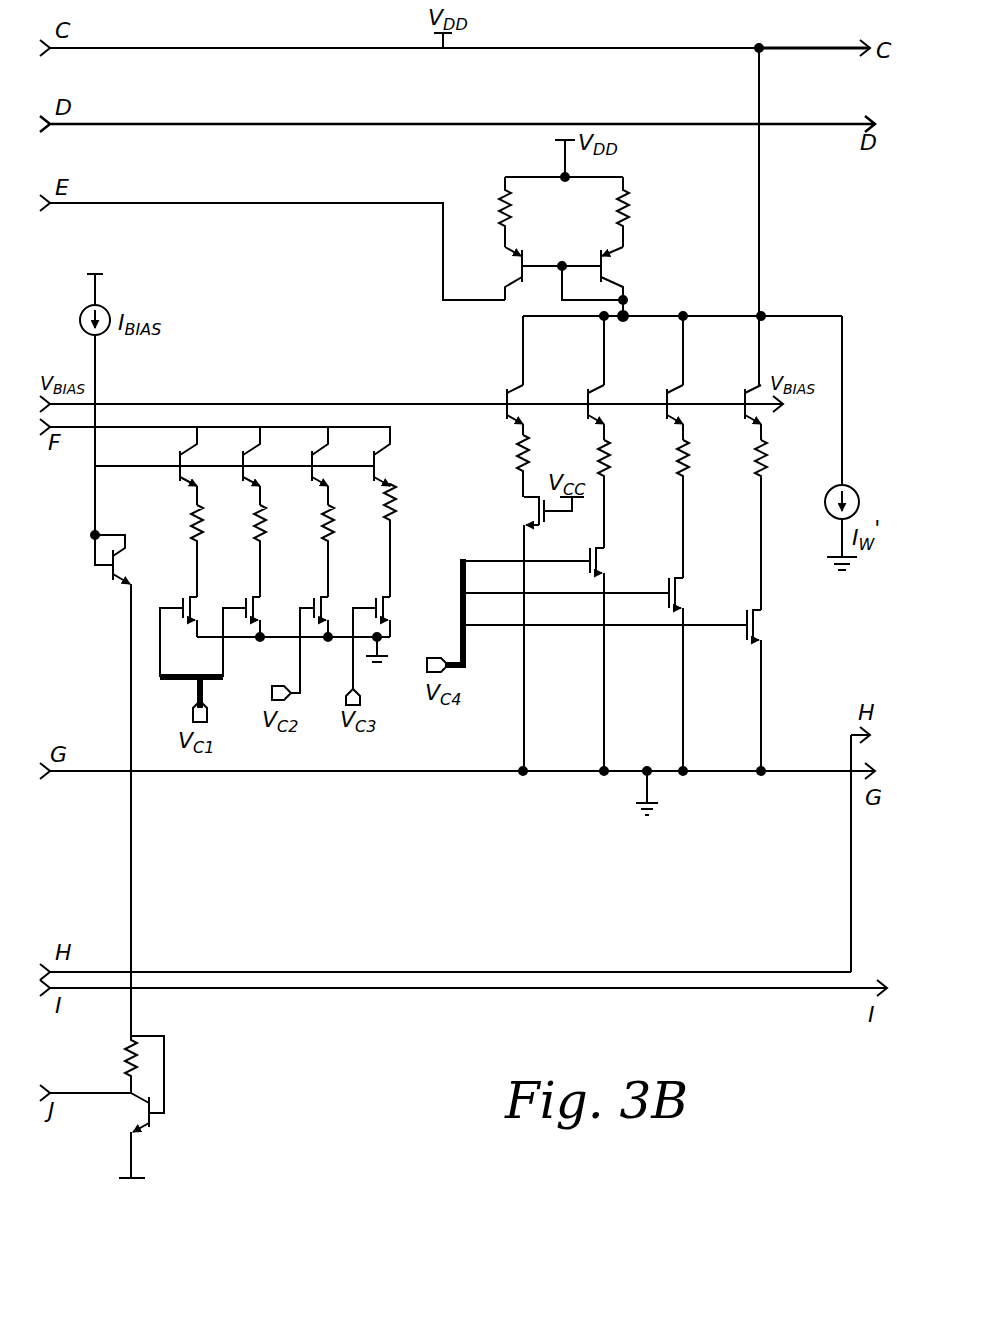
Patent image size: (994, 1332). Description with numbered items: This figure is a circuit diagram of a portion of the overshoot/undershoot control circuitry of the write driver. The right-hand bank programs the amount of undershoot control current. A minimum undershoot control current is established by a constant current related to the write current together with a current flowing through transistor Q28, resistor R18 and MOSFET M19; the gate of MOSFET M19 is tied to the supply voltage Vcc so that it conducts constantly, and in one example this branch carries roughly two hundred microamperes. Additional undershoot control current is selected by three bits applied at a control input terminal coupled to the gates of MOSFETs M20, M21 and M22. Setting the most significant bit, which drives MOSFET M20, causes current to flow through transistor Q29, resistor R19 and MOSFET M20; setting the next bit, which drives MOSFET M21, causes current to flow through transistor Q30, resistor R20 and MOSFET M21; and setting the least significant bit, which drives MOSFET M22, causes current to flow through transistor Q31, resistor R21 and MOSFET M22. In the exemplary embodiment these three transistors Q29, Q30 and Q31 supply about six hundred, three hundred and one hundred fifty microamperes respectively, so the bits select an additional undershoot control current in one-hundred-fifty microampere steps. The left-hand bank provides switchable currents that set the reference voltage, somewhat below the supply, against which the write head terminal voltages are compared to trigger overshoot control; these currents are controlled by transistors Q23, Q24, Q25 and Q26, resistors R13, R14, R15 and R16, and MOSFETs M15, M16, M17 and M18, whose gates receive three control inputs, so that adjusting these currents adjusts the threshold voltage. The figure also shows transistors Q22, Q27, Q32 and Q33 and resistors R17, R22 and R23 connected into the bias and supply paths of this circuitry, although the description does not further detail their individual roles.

The transistor Q22 is at (129, 785).
The transistor Q23 is at (163, 466).
The transistor Q24 is at (230, 466).
The transistor Q25 is at (298, 466).
The transistor Q26 is at (403, 468).
The transistor Q27 is at (128, 1107).
The transistor Q28 is at (491, 406).
The transistor Q29 is at (573, 409).
The transistor Q30 is at (652, 409).
The transistor Q31 is at (732, 409).
The transistor Q32 is at (564, 268).
The transistor Q33 is at (591, 268).
The resistor R13 is at (179, 551).
The resistor R14 is at (241, 551).
The resistor R15 is at (308, 548).
The resistor R16 is at (373, 540).
The resistor R17 is at (113, 1064).
The resistor R18 is at (502, 466).
The resistor R19 is at (625, 494).
The resistor R20 is at (701, 509).
The resistor R21 is at (779, 525).
The resistor R22 is at (525, 212).
The resistor R23 is at (601, 212).
The MOSFET M15 is at (179, 637).
The MOSFET M16 is at (239, 621).
The MOSFET M17 is at (306, 629).
The MOSFET M18 is at (393, 641).
The MOSFET M19 is at (531, 634).
The MOSFET M20 is at (553, 659).
The MOSFET M21 is at (593, 674).
The MOSFET M22 is at (635, 690).